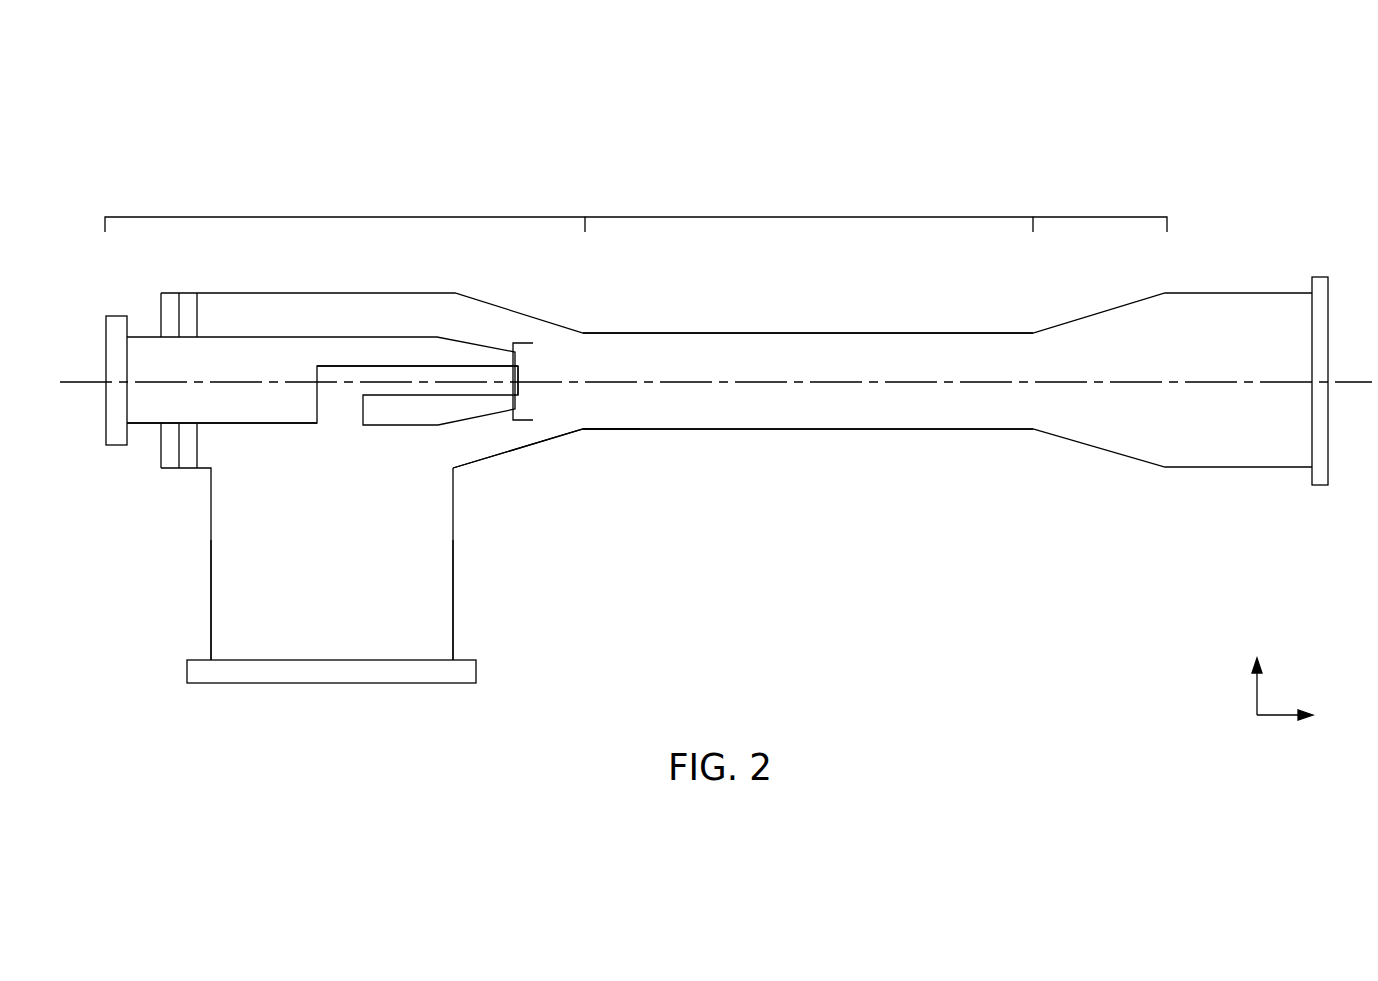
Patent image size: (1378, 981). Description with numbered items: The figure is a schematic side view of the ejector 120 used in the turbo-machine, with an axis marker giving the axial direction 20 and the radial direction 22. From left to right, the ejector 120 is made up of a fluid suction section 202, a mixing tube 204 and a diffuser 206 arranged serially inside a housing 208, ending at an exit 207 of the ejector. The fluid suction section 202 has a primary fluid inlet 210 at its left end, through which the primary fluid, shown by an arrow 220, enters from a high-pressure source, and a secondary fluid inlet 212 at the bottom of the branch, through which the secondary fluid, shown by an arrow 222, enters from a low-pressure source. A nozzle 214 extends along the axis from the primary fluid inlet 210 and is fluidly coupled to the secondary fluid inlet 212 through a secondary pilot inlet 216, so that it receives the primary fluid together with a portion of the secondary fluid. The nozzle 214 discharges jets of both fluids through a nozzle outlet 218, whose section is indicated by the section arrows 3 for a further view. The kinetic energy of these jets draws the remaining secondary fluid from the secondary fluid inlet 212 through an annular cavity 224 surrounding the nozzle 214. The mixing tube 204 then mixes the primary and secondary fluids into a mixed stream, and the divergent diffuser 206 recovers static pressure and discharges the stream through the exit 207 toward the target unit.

The ejector 120 is at (1216, 99).
The fluid suction section 202 is at (325, 217).
The mixing tube 204 is at (797, 217).
The diffuser 206 is at (1112, 217).
The exit 207 is at (1328, 308).
The housing 208 is at (885, 333).
The primary fluid inlet 210 is at (118, 316).
The secondary fluid inlet 212 is at (331, 683).
The nozzle 214 is at (231, 352).
The secondary pilot inlet 216 is at (337, 430).
The nozzle outlet 218 is at (542, 395).
The arrow representing primary fluid 220 is at (180, 394).
The arrow representing secondary fluid 222 is at (334, 594).
The annular cavity 224 is at (485, 437).
The section view FIG. 3 is at (533, 343).
The radial direction 22 is at (1253, 692).
The axial direction 20 is at (1278, 718).